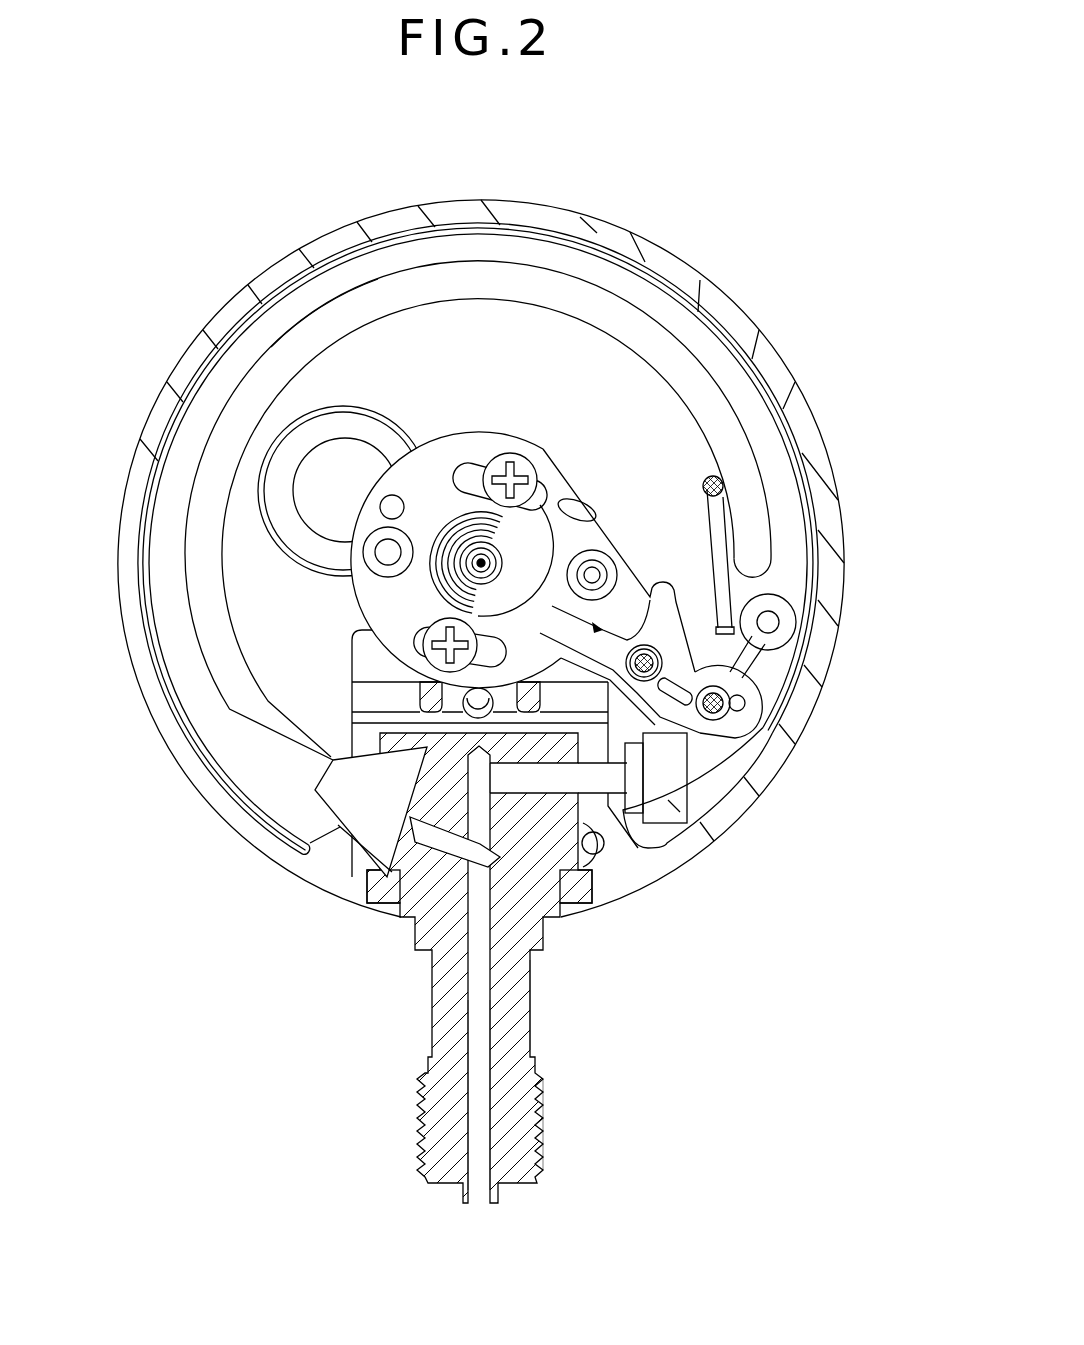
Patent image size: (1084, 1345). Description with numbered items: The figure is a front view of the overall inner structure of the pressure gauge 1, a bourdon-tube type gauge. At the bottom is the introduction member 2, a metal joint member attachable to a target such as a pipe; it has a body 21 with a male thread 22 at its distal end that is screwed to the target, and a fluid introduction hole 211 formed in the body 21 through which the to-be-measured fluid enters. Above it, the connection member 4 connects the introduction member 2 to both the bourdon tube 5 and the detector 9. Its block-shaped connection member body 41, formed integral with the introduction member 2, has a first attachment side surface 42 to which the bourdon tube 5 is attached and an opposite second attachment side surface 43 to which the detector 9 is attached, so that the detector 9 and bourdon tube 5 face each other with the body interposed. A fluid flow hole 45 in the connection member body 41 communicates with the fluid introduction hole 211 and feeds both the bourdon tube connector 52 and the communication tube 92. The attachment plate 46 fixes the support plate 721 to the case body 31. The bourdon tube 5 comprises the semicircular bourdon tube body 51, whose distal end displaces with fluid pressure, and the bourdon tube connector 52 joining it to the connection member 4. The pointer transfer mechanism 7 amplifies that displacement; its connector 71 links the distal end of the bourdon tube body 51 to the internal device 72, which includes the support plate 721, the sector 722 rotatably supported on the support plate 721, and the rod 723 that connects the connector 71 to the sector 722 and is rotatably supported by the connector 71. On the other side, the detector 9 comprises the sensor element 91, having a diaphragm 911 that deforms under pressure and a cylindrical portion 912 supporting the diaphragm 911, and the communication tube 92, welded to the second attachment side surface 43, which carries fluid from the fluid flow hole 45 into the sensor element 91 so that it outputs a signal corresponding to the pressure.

The pressure gauge 1 is at (716, 190).
The introduction member 2 is at (505, 1075).
The body 21 is at (530, 1020).
The male thread 22 is at (541, 1112).
The fluid introduction hole 211 is at (470, 1050).
The case body 31 is at (745, 330).
The connection member 4 is at (610, 886).
The connection member body 41 is at (400, 905).
The first attachment side surface 42 is at (377, 737).
The second attachment side surface 43 is at (620, 876).
The fluid flow hole 45 is at (492, 926).
The attachment plate 46 is at (355, 626).
The bourdon tube 5 is at (447, 283).
The bourdon tube body 51 is at (335, 320).
The bourdon tube connector 52 is at (380, 783).
The pointer transfer mechanism 7 is at (573, 545).
The connector 71 is at (723, 573).
The internal device 72 is at (543, 430).
The support plate 721 is at (462, 456).
The sector 722 is at (582, 518).
The rod 723 is at (723, 677).
The detector 9 is at (733, 796).
The sensor element 91 is at (677, 800).
The diaphragm 911 is at (687, 763).
The cylindrical portion 912 is at (663, 753).
The communication tube 92 is at (683, 847).